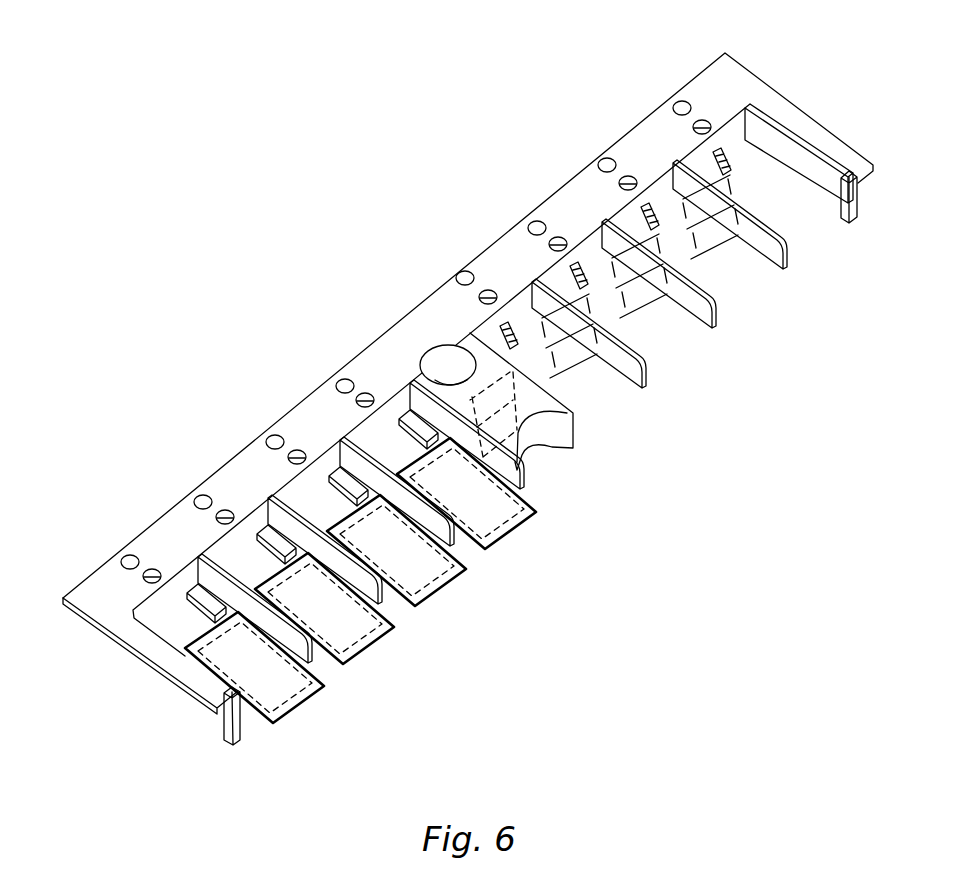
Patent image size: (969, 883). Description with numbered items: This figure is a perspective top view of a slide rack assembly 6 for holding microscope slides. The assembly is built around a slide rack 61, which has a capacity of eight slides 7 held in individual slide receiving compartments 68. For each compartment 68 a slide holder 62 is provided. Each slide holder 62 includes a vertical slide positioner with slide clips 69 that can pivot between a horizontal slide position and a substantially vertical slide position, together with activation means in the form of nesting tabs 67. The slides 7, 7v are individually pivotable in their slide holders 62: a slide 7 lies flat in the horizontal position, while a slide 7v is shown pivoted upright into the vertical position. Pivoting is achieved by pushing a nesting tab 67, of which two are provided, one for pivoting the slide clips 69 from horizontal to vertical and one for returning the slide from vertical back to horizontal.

The slide rack assembly 6 is at (353, 165).
The slide rack 61 is at (313, 408).
The slide holder 62 is at (669, 338).
The nesting tab 67 is at (297, 457).
The slide receiving compartment 68 is at (569, 454).
The slide clip 69 is at (465, 329).
The slide 7 is at (569, 485).
The slide in vertical position 7v is at (779, 237).